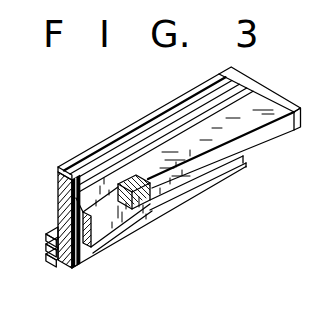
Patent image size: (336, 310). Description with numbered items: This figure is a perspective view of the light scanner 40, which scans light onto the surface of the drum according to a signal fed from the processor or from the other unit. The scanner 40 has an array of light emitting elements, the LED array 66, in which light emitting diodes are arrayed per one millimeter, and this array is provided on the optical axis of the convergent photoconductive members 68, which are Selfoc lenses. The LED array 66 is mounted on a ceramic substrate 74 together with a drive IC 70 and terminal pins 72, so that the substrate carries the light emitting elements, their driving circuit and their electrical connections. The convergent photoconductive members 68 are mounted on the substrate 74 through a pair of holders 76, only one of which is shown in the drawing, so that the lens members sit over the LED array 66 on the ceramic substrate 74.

The scanner 40 is at (160, 104).
The LED array 66 is at (124, 160).
The convergent photoconductive members 68 is at (258, 128).
The drive IC 70 is at (131, 219).
The terminal pins 72 is at (46, 248).
The ceramic substrate 74 is at (60, 191).
The holders 76 is at (262, 89).